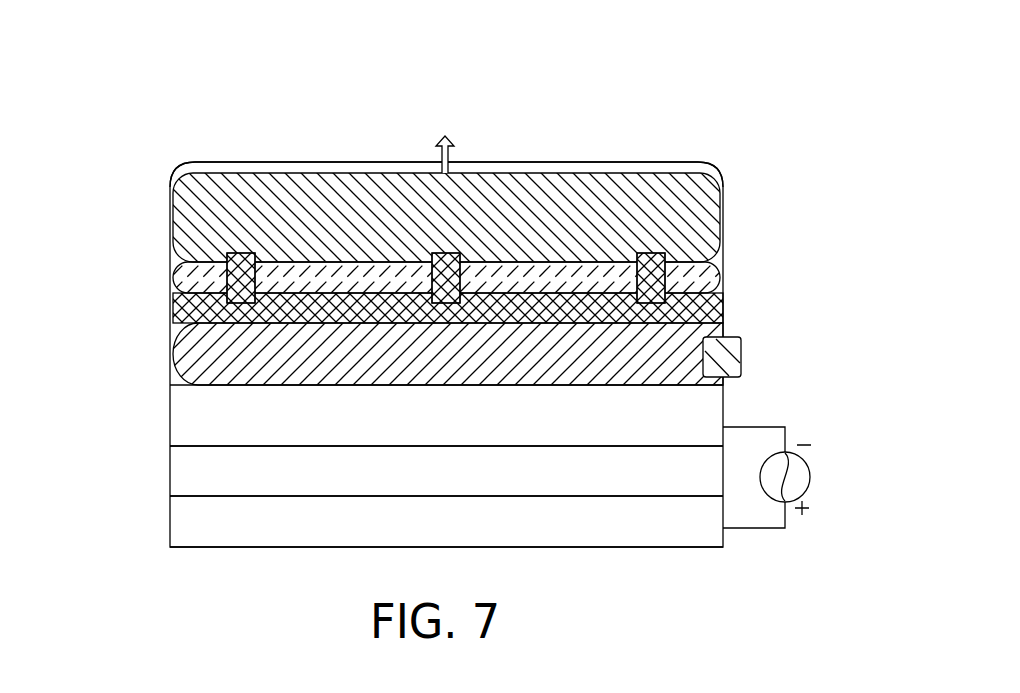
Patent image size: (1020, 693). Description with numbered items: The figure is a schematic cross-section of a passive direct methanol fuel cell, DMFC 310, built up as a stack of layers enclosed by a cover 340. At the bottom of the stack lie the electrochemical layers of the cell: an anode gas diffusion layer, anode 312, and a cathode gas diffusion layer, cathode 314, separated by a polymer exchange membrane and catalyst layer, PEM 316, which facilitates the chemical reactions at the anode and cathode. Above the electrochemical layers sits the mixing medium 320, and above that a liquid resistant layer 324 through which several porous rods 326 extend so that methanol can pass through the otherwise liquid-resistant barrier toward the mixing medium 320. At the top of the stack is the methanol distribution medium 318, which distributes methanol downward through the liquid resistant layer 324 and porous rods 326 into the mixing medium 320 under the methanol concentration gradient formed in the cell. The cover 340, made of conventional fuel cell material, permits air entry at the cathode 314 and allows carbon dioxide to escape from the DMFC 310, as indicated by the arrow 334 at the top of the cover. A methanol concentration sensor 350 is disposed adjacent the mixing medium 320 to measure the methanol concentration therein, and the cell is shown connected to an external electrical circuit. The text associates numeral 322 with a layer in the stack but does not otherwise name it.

The passive DMFC 310 is at (118, 116).
The anode 312 is at (190, 413).
The cathode 314 is at (190, 520).
The PEM 316 is at (190, 470).
The methanol distribution medium 318 is at (185, 221).
The mixing medium 320 is at (185, 352).
The electrolyte layer 322 is at (185, 310).
The liquid resistant layer 324 is at (701, 281).
The porous rods 326 is at (700, 297).
The arrow 334 is at (438, 150).
The cover 340 is at (220, 162).
The methanol concentration sensor 350 is at (730, 366).